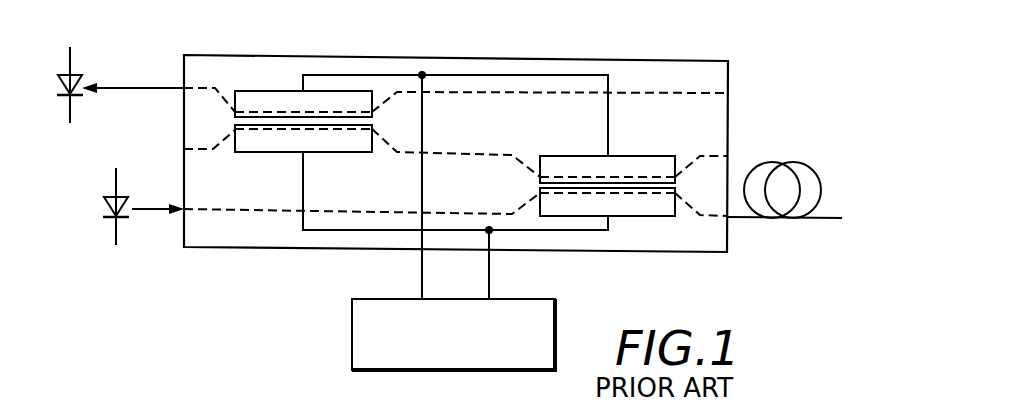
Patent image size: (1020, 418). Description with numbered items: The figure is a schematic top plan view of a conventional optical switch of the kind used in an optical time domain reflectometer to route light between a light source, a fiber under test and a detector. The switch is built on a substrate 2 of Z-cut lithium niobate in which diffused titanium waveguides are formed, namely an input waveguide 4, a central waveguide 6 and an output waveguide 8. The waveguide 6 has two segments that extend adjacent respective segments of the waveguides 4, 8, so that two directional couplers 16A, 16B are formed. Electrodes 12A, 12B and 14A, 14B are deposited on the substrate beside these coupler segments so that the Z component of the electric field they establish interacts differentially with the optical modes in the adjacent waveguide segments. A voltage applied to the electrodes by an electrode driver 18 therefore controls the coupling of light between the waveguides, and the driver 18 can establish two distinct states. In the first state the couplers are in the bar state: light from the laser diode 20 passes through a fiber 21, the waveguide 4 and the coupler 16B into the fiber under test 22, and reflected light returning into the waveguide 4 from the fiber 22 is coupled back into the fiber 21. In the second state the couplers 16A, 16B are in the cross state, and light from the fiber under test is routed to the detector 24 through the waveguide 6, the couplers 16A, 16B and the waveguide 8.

The substrate 2 is at (632, 61).
The waveguide 4 is at (248, 211).
The waveguide 6 is at (222, 150).
The waveguide 8 is at (205, 86).
The electrode 12A is at (318, 155).
The electrode 12B is at (650, 218).
The electrode 14A is at (258, 90).
The electrode 14B is at (630, 155).
The directional coupler 16A is at (290, 76).
The directional coupler 16B is at (623, 230).
The electrode driver 18 is at (350, 343).
The laser diode 20 is at (108, 207).
The fiber 21 is at (150, 211).
The fiber under test 22 is at (815, 220).
The detector 24 is at (82, 84).